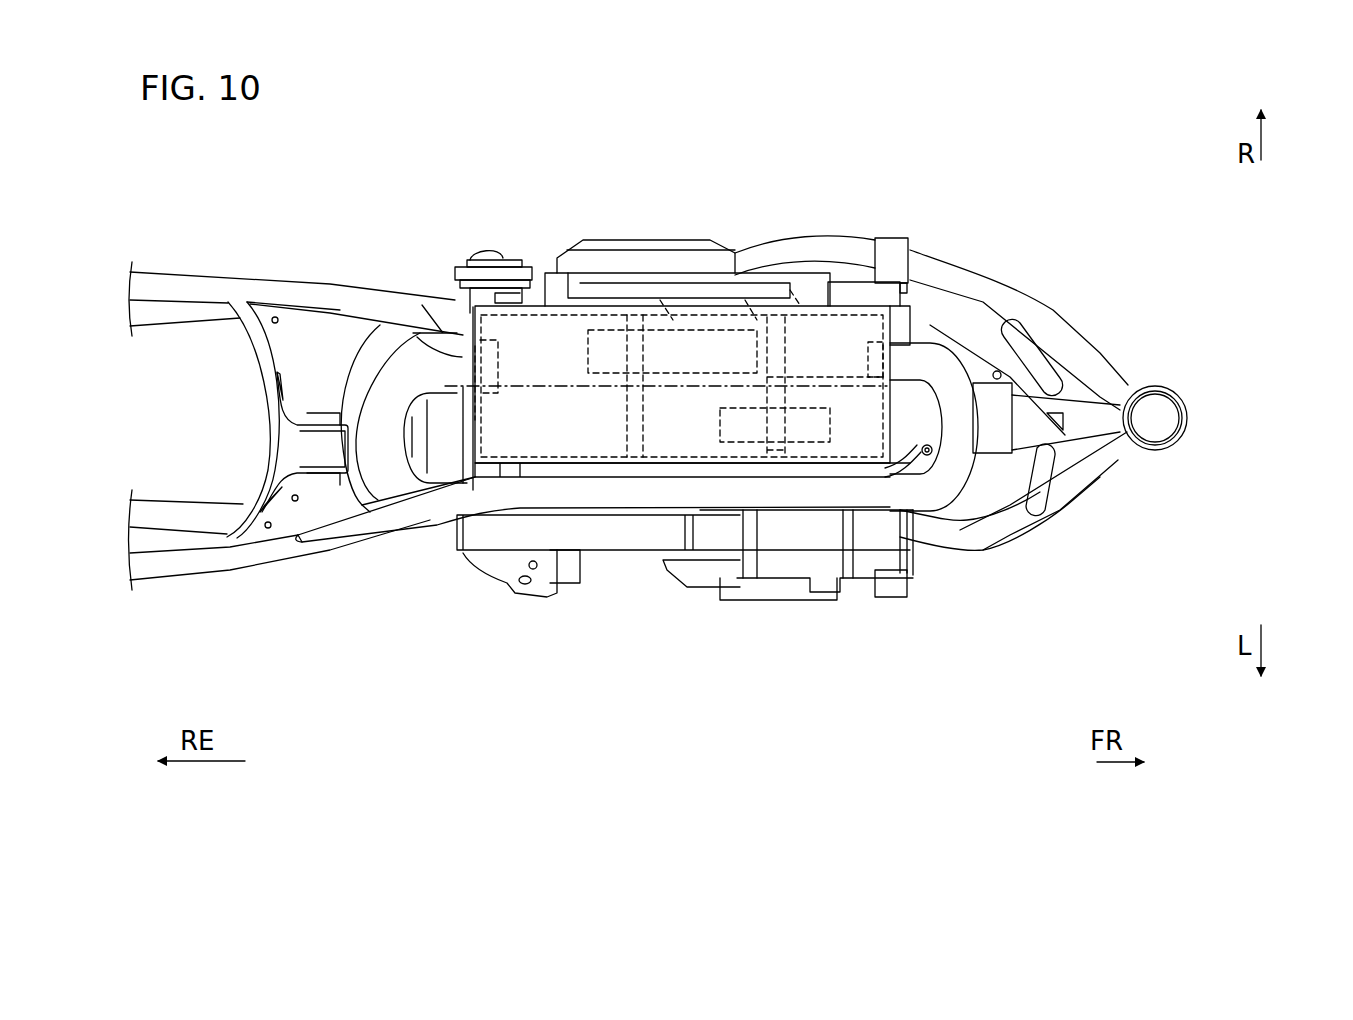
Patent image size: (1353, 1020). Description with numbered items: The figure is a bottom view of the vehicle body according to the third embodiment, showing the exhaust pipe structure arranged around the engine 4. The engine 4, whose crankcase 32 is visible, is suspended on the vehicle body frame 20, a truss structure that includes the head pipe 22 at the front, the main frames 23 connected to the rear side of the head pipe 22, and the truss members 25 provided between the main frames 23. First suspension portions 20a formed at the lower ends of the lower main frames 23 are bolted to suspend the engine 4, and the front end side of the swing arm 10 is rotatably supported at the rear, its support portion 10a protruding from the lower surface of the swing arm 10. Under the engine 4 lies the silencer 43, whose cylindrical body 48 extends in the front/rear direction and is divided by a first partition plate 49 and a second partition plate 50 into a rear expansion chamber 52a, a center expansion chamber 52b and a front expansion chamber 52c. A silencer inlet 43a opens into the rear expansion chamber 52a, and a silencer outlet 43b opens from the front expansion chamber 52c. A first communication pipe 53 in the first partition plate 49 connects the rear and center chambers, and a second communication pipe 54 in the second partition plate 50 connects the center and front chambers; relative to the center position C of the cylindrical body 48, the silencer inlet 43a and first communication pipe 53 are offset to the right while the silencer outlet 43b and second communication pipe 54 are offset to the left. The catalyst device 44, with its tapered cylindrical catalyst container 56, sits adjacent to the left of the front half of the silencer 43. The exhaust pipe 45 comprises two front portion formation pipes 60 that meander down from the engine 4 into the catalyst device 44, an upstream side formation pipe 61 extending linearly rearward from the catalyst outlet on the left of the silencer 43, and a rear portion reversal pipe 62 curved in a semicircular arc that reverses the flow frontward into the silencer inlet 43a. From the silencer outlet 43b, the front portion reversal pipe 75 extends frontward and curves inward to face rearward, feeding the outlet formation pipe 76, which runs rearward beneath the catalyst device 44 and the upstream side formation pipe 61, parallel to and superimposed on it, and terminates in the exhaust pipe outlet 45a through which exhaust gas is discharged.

The engine 4 is at (843, 630).
The swing arm 10 is at (177, 563).
The support portion 10a is at (315, 437).
The vehicle body frame 20 is at (1160, 470).
The first suspension portions 20a is at (890, 238).
The head pipe 22 is at (1160, 388).
The main frames 23 is at (1080, 357).
The truss members 25 is at (1037, 357).
The crankcase 32 is at (571, 286).
The silencer 43 is at (845, 295).
The silencer inlet 43a is at (490, 377).
The silencer outlet 43b is at (868, 352).
The catalyst device 44 is at (716, 580).
The exhaust pipe 45 is at (393, 550).
The exhaust pipe outlet 45a is at (322, 548).
The cylindrical body 48 is at (803, 293).
The first partition plate 49 is at (623, 437).
The second partition plate 50 is at (757, 320).
The rear expansion chamber 52a is at (527, 300).
The center expansion chamber 52b is at (673, 320).
The front expansion chamber 52c is at (800, 305).
The first communication pipe 53 is at (610, 380).
The second communication pipe 54 is at (720, 420).
The catalyst container 56 is at (800, 560).
The front portion formation pipes 60 is at (953, 515).
The upstream side formation pipe 61 is at (623, 533).
The rear portion reversal pipe 62 is at (430, 530).
The front portion reversal pipe 75 is at (943, 375).
The outlet formation pipe 76 is at (587, 497).
The center position C is at (412, 296).